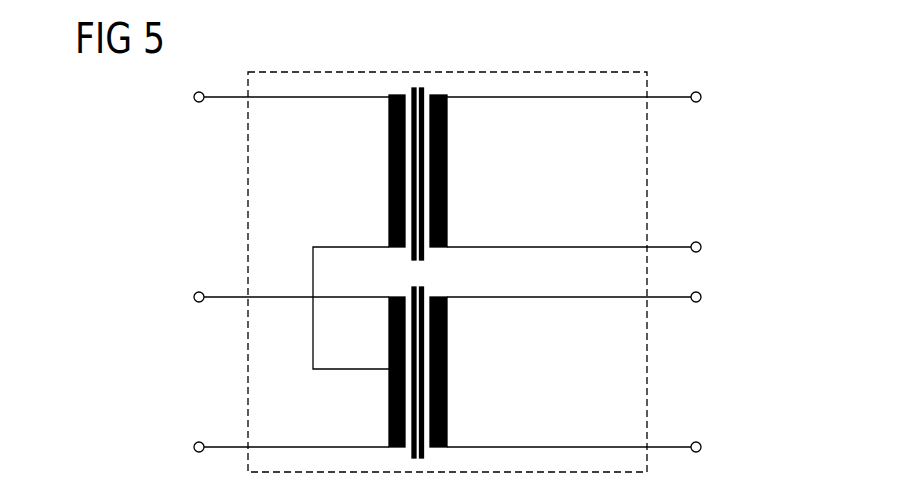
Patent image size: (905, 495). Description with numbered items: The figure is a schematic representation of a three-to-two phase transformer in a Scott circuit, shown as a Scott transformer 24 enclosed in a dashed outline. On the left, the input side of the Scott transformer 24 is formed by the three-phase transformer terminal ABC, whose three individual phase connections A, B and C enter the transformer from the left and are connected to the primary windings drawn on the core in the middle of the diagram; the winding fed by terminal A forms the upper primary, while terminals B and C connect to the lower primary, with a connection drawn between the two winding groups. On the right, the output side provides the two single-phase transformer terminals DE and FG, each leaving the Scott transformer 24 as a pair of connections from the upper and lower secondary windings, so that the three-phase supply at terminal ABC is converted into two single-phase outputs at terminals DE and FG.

The Scott transformer 24 is at (248, 377).
The phase A terminal A is at (193, 97).
The phase B terminal B is at (193, 297).
The phase C terminal C is at (193, 447).
The three-phase transformer terminal ABC is at (155, 208).
The single-phase transformer terminal DE is at (699, 166).
The single-phase transformer terminal FG is at (699, 366).